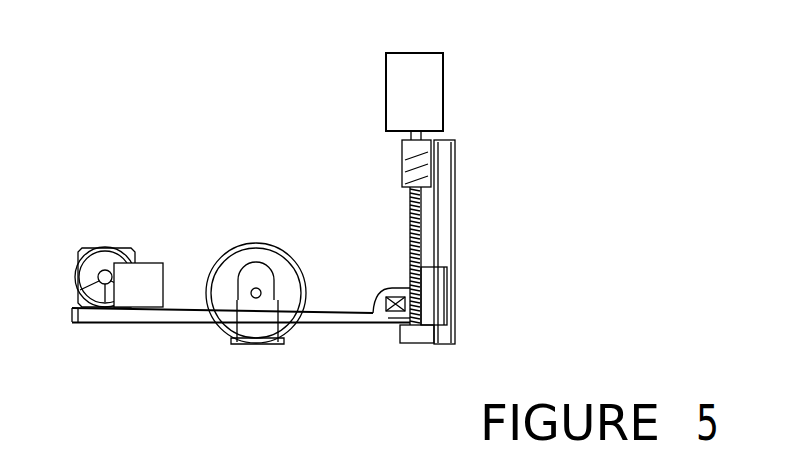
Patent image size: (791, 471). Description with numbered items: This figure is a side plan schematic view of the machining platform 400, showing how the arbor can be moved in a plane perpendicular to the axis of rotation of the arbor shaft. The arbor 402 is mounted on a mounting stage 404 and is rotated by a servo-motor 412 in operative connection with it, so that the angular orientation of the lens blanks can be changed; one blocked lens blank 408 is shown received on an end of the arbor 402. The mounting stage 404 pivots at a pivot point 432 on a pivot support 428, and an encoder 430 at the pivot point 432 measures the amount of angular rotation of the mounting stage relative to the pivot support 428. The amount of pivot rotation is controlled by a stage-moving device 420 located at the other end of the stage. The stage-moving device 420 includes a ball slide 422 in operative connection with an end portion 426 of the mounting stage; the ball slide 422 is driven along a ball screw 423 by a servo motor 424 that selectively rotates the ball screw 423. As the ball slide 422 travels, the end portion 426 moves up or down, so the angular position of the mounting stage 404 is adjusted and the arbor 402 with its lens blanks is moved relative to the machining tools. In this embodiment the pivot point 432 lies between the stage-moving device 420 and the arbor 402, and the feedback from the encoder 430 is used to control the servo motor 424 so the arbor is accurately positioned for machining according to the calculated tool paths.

The machining platform 400 is at (172, 137).
The arbor 402 is at (79, 323).
The mounting stage 404 is at (198, 312).
The blocked lens blank 408 is at (103, 258).
The servo-motor 412 is at (158, 263).
The stage-moving device 420 is at (483, 204).
The ball slide 422 is at (481, 314).
The ball screw 423 is at (410, 232).
The servo motor 424 is at (443, 87).
The end portion 426 is at (392, 316).
The pivot support 428 is at (284, 342).
The encoder 430 is at (232, 342).
The pivot point 432 is at (257, 293).